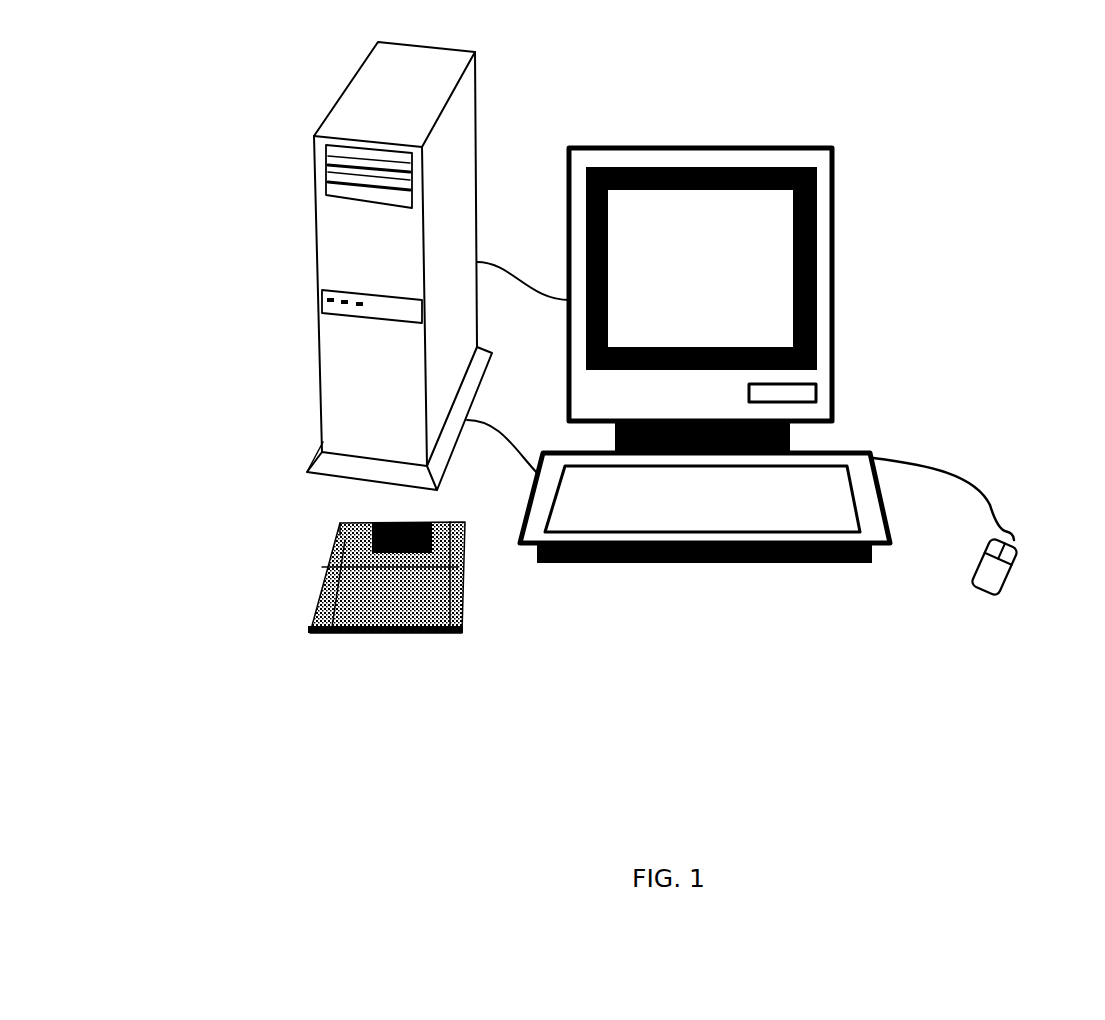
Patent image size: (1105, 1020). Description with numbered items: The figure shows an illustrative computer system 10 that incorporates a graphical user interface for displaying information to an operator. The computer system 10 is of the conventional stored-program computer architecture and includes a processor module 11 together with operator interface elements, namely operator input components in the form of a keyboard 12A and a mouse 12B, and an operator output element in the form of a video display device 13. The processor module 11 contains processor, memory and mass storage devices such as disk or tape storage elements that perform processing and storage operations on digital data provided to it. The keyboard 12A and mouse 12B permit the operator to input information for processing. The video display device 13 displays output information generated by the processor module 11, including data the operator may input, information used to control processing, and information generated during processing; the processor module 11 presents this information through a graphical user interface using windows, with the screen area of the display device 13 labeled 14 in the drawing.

The computer system 10 is at (226, 671).
The processor module 11 is at (318, 265).
The keyboard 12A is at (702, 558).
The mouse 12B is at (1010, 580).
The video display device 13 is at (833, 240).
The display screen 14 is at (741, 244).